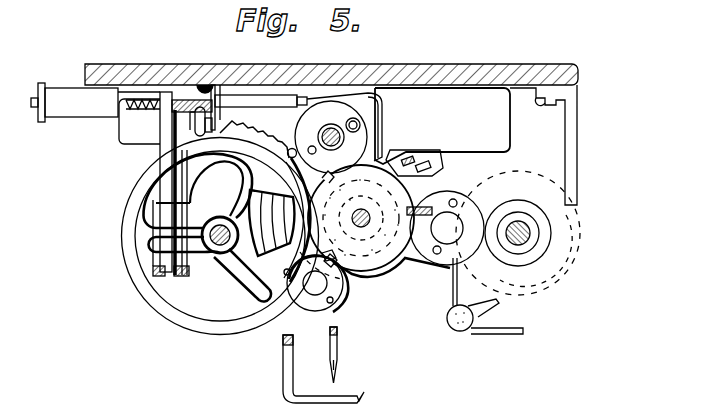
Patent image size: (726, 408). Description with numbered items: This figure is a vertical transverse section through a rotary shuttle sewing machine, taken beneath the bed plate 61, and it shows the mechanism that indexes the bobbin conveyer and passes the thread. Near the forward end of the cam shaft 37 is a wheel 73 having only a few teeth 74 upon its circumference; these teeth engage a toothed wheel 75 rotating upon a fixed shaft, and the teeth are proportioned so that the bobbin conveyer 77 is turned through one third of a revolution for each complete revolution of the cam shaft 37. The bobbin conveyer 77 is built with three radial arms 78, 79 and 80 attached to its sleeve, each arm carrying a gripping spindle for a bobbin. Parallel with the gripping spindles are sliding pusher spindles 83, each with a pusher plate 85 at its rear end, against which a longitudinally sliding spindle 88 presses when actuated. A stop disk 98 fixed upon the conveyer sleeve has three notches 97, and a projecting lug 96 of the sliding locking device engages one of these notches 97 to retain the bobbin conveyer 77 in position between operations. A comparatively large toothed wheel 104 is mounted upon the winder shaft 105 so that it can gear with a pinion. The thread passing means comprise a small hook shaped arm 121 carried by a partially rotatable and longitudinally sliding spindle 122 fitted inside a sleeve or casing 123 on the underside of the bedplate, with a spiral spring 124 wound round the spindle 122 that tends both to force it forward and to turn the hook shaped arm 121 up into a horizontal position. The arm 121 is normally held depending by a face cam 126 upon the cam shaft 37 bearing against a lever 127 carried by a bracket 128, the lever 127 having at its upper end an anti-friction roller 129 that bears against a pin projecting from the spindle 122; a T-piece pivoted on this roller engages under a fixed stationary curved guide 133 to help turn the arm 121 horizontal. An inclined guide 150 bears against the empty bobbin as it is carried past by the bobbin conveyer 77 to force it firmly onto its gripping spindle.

The bed plate 61 is at (405, 76).
The sleeve or casing 123 is at (95, 102).
The spiral spring 124 is at (143, 110).
The lever 127 is at (190, 172).
The bracket 128 is at (165, 211).
The face cam 126 is at (188, 250).
The curved guide 133 is at (214, 85).
The anti-friction roller 129 is at (194, 127).
The sliding spindle 122 is at (243, 100).
The hook shaped arm 121 is at (384, 113).
The radial arm 80 is at (426, 156).
The longitudinally sliding spindle 88 is at (345, 137).
The teeth 74 is at (249, 138).
The cam shaft 37 is at (217, 249).
The wheel 73 is at (252, 287).
The radial arm 79 is at (352, 268).
The stop disk 98 is at (380, 264).
The notches 97 is at (411, 206).
The projecting lug 96 is at (463, 189).
The toothed wheel 104 is at (508, 254).
The winder shaft 105 is at (521, 218).
The bobbin conveyer 77 is at (400, 260).
The radial arm 78 is at (430, 263).
The toothed wheel 75 is at (394, 288).
The inclined guide 150 is at (271, 265).
The pusher plate 85 is at (326, 306).
The pusher spindle 83 is at (487, 300).